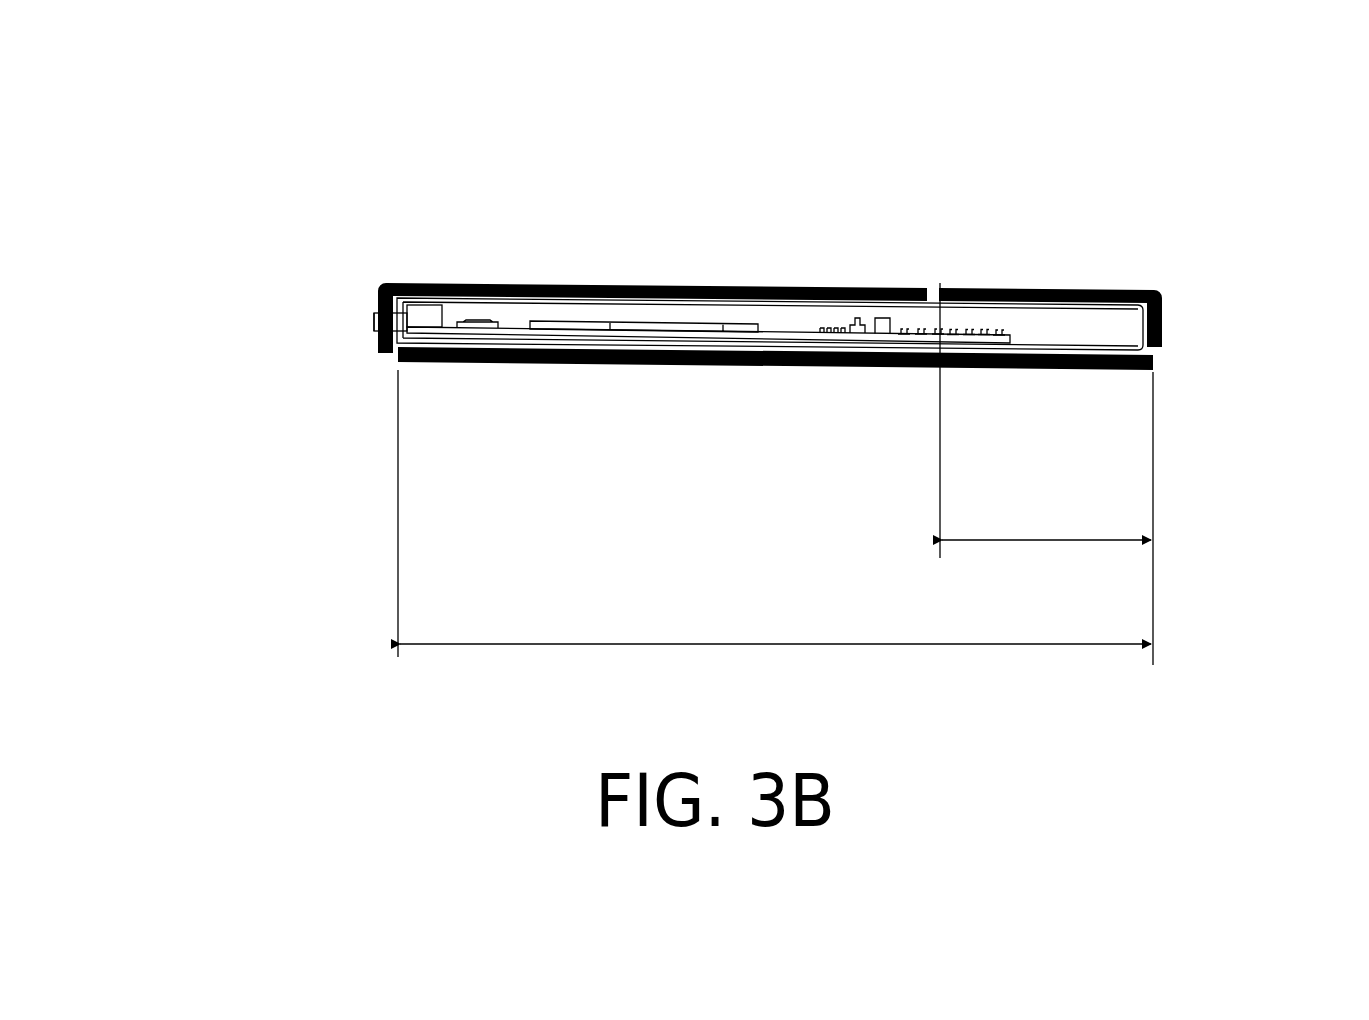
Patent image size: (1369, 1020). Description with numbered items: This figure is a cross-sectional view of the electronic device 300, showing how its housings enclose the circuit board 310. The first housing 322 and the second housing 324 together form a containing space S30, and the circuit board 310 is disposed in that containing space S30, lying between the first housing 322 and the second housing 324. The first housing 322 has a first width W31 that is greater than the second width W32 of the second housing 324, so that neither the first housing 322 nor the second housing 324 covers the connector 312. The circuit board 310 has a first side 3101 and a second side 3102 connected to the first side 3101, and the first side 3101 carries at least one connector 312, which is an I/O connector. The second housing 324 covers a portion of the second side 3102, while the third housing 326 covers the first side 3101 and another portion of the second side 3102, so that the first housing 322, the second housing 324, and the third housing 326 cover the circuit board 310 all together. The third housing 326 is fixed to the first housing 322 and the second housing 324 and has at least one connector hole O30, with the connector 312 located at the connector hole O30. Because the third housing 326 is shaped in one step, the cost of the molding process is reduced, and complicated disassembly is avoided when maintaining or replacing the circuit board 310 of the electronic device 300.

The electronic device 300 is at (694, 361).
The circuit board 310 is at (762, 342).
The first side 3101 is at (422, 312).
The second side 3102 is at (663, 316).
The connector 312 is at (380, 328).
The first housing 322 is at (637, 365).
The second housing 324 is at (1025, 288).
The third housing 326 is at (435, 283).
The connector hole O30 is at (363, 321).
The containing space S30 is at (815, 316).
The first width W31 is at (775, 517).
The second width W32 is at (1045, 420).